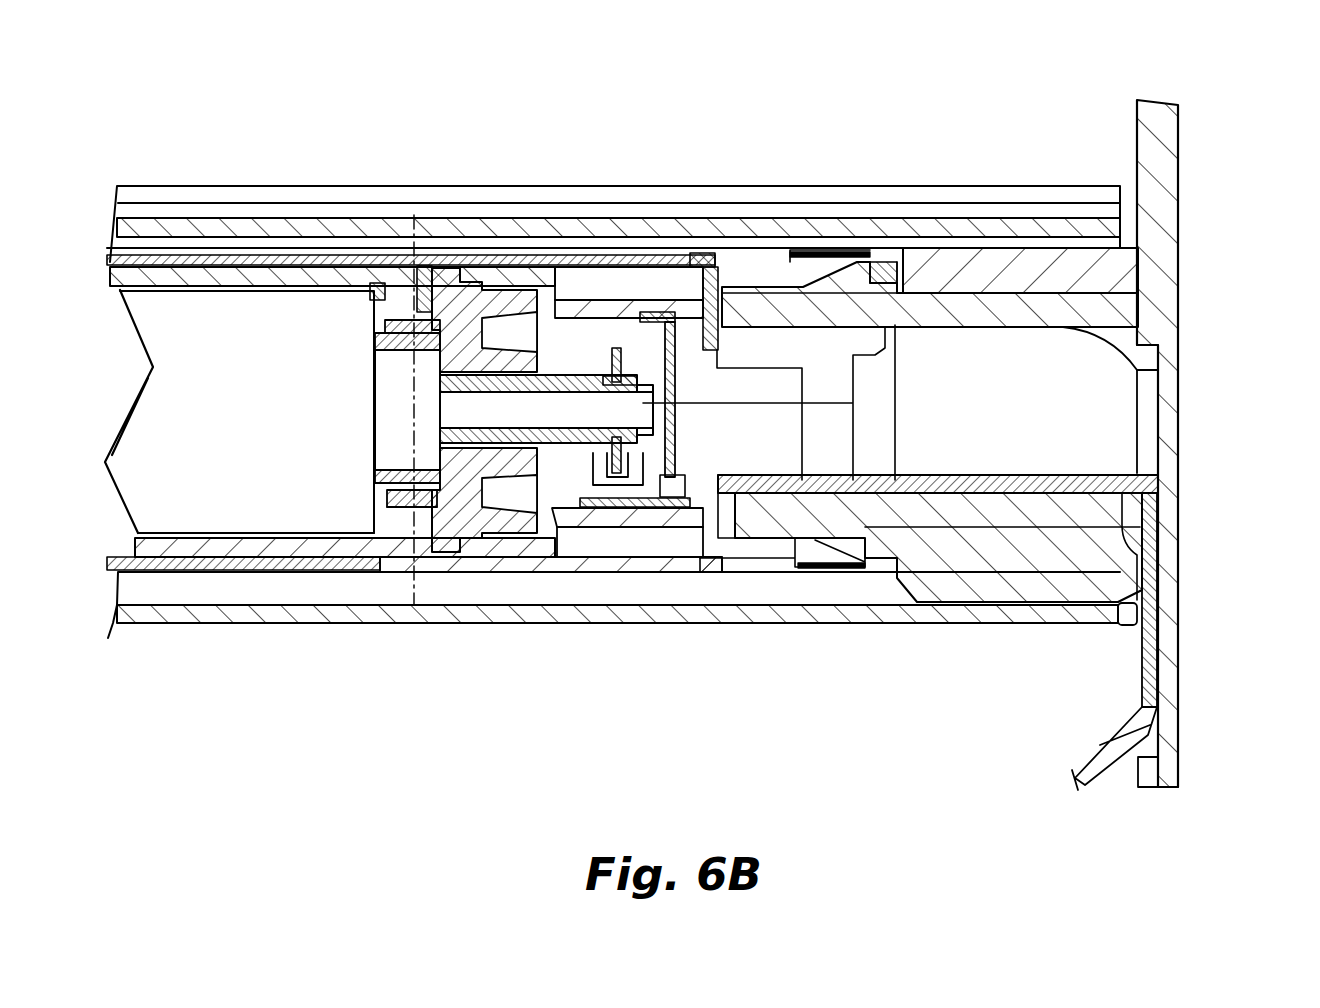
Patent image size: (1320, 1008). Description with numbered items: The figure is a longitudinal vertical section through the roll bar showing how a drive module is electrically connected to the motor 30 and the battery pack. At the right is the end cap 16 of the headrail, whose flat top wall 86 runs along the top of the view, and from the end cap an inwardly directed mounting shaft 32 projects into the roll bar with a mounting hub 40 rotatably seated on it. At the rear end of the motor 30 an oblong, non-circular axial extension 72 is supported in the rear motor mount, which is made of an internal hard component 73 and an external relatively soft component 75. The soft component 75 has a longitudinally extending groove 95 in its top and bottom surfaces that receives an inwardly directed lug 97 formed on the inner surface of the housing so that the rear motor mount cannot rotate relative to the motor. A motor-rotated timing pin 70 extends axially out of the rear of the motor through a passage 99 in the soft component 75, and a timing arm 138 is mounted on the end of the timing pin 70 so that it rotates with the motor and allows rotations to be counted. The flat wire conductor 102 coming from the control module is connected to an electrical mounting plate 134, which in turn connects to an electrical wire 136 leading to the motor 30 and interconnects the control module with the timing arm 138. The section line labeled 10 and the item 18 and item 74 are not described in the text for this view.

The section line 10 is at (432, 242).
The end cap 16 is at (1180, 180).
The tube 18 is at (660, 213).
The motor 30 is at (193, 342).
The mounting shaft 32 is at (1160, 370).
The mounting hub 40 is at (1153, 513).
The timing pin 70 is at (523, 453).
The axial extension 72 is at (393, 397).
The hard component 73 is at (374, 481).
The piston 74 is at (398, 460).
The soft component 75 is at (540, 343).
The top wall 86 is at (518, 188).
The groove 95 is at (419, 300).
The lug 97 is at (372, 300).
The passage 99 is at (492, 455).
The flat wire conductor 102 is at (1140, 706).
The electrical mounting plate 134 is at (583, 505).
The electrical wire 136 is at (690, 387).
The timing arm 138 is at (620, 476).